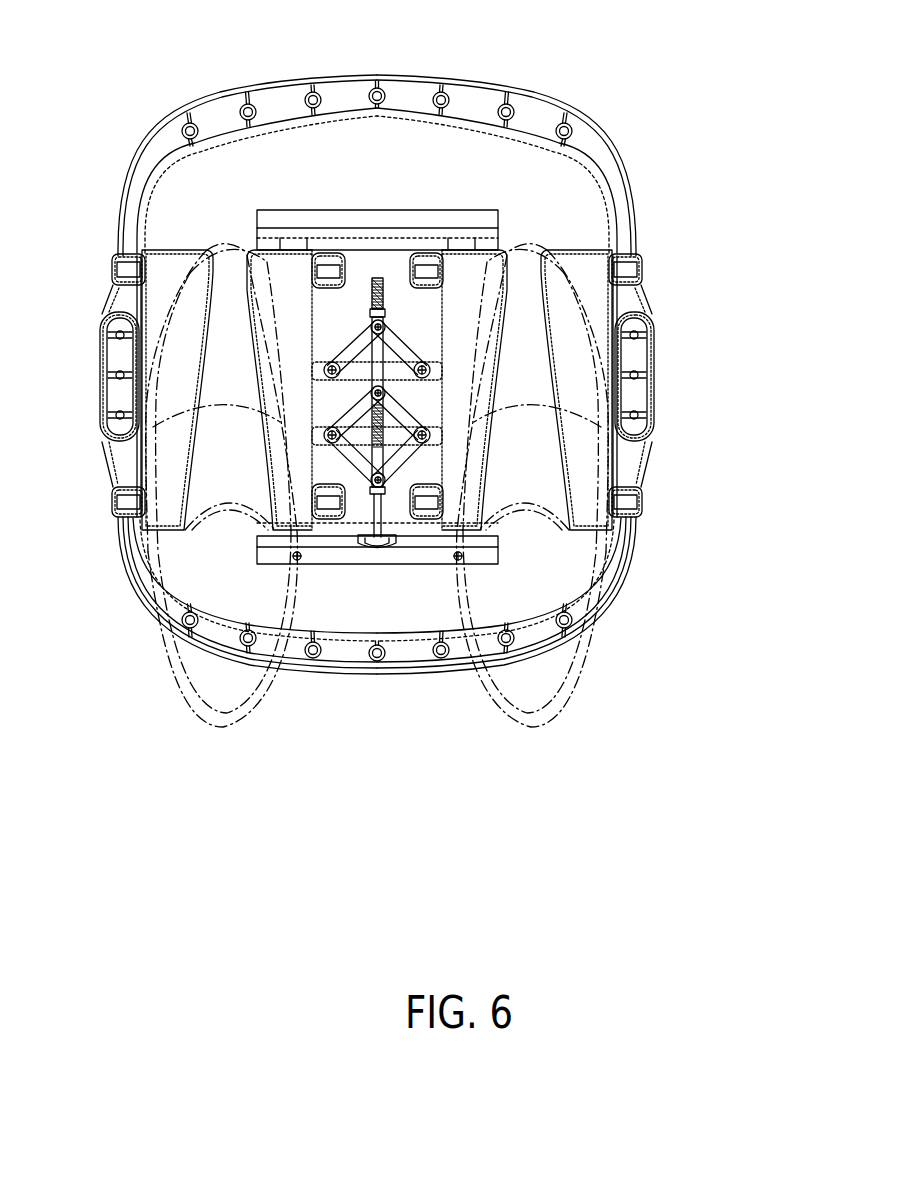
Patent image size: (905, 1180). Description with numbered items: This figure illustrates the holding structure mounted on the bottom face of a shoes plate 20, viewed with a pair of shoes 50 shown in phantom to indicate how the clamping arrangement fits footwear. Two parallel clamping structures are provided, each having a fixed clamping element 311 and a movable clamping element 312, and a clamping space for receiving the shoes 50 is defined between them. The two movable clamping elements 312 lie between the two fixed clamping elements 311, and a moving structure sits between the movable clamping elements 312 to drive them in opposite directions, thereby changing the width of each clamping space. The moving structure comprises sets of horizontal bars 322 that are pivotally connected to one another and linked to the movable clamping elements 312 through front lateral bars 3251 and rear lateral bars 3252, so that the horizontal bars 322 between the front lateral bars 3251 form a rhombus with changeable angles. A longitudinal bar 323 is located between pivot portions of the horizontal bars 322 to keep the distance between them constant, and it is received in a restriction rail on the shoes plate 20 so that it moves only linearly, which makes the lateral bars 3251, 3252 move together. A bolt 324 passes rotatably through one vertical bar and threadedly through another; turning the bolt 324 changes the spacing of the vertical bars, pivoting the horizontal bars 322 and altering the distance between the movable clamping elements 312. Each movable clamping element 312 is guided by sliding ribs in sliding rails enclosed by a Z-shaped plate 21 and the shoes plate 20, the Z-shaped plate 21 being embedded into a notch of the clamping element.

The shoes plate 20 is at (530, 95).
The Z-shaped plate 21 is at (347, 560).
The shoes 50 is at (533, 240).
The fixed clamping element 311 is at (165, 262).
The movable clamping element 312 is at (298, 263).
The horizontal bar 322 is at (357, 347).
The longitudinal bar 323 is at (380, 353).
The bolt 324 is at (378, 512).
The front lateral bar 3251 is at (435, 436).
The rear lateral bar 3252 is at (435, 368).